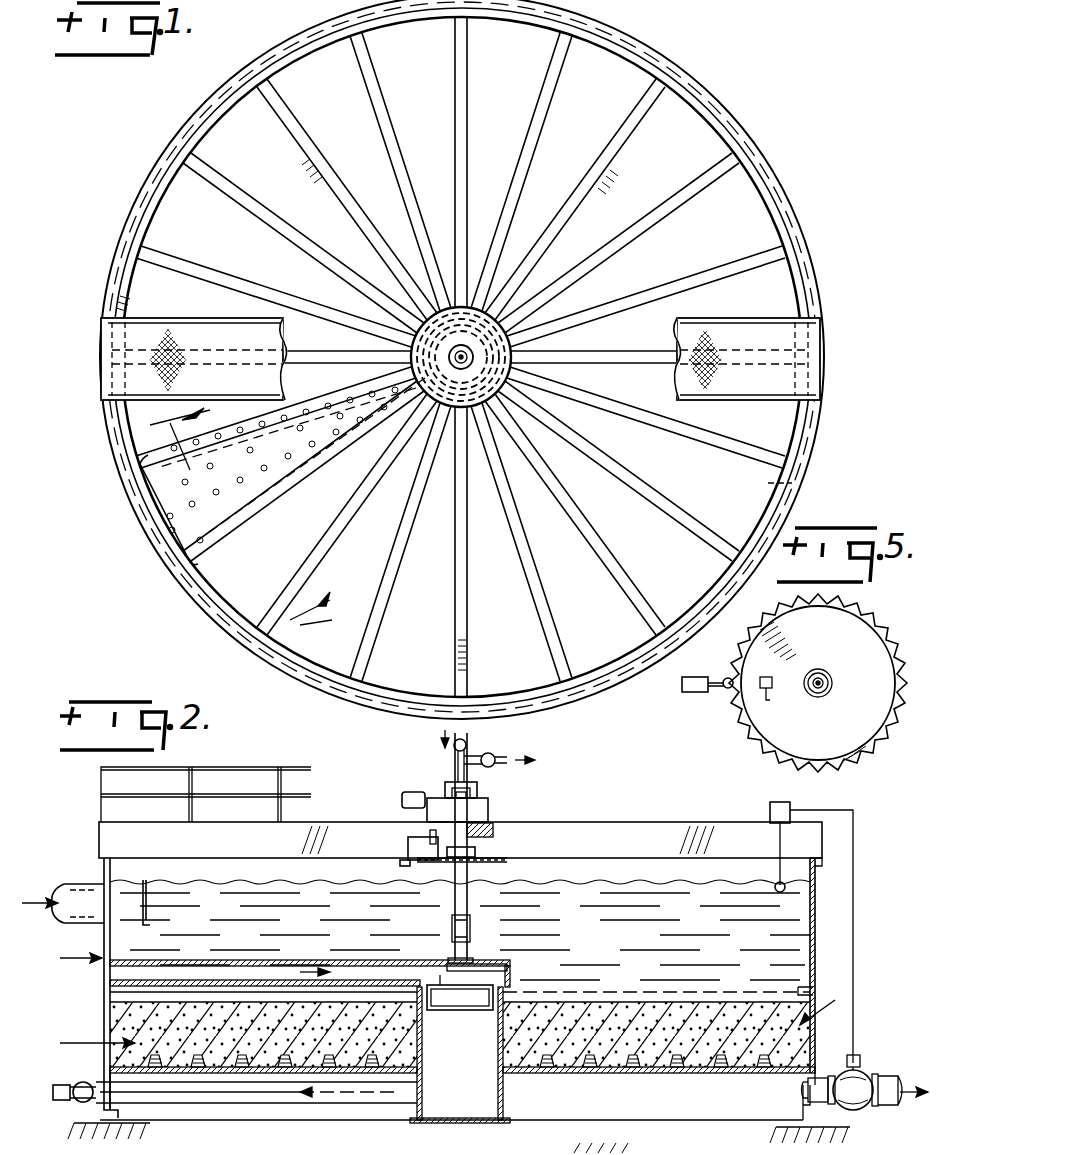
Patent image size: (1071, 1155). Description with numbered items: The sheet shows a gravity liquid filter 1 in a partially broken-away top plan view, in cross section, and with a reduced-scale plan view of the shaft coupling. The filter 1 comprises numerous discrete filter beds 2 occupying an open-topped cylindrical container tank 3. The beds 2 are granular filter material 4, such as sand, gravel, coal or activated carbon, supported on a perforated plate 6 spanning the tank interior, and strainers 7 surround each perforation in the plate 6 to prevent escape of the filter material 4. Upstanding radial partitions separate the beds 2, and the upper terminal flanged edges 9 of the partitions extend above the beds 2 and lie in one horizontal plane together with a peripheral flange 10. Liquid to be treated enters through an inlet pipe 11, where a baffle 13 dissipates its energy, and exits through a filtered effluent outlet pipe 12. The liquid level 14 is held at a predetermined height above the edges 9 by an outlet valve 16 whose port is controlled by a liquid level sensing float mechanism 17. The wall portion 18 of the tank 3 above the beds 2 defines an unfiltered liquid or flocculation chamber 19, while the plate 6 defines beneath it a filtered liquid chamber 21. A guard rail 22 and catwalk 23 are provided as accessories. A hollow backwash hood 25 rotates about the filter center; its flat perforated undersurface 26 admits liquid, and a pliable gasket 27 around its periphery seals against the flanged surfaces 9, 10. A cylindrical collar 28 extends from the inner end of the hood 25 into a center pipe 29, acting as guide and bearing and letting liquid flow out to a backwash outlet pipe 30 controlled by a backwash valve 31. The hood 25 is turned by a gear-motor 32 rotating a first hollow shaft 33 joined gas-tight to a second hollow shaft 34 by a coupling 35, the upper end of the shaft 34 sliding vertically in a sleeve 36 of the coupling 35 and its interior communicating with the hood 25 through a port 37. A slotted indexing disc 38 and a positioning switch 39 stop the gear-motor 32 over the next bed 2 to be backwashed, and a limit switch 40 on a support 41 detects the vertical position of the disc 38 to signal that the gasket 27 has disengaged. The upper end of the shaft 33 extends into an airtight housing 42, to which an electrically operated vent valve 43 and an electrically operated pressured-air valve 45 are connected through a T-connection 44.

In FIG. 1, the gravity liquid filter 1 is at (446, 359).
In FIG. 1, the filter bed 2 is at (192, 207).
In FIG. 2, the filter bed 2 is at (442, 1025).
In FIG. 1, the container tank 3 is at (826, 483).
In FIG. 2, the container tank 3 is at (71, 958).
In FIG. 2, the granular filter material 4 is at (615, 1073).
In FIG. 2, the perforated plate 6 is at (756, 1076).
In FIG. 2, the strainer 7 is at (712, 1074).
In FIG. 1, the flanged edge 9 is at (460, 618).
In FIG. 2, the flanged edge 9 is at (118, 1008).
In FIG. 1, the peripheral flange 10 is at (705, 115).
In FIG. 2, the peripheral flange 10 is at (800, 992).
In FIG. 2, the inlet pipe 11 is at (84, 884).
In FIG. 2, the filtered effluent outlet pipe 12 is at (880, 1110).
In FIG. 2, the baffle 13 is at (150, 925).
In FIG. 2, the liquid level 14 is at (700, 882).
In FIG. 2, the outlet valve 16 is at (856, 1075).
In FIG. 2, the liquid level sensing float mechanism 17 is at (770, 806).
In FIG. 2, the wall portion 18 is at (810, 938).
In FIG. 2, the flocculation chamber 19 is at (460, 930).
In FIG. 2, the filtered liquid chamber 21 is at (556, 1120).
In FIG. 1, the guard rail 22 is at (192, 318).
In FIG. 2, the guard rail 22 is at (250, 766).
In FIG. 1, the catwalk 23 is at (433, 342).
In FIG. 2, the catwalk 23 is at (125, 822).
In FIG. 1, the backwash hood 25 is at (185, 512).
In FIG. 2, the backwash hood 25 is at (300, 980).
In FIG. 2, the undersurface 26 is at (380, 986).
In FIG. 1, the gasket 27 is at (132, 470).
In FIG. 2, the gasket 27 is at (115, 983).
In FIG. 2, the collar 28 is at (494, 1008).
In FIG. 2, the center pipe 29 is at (492, 1124).
In FIG. 2, the backwash outlet pipe 30 is at (378, 1106).
In FIG. 2, the backwash valve 31 is at (80, 1102).
In FIG. 2, the gear-motor 32 is at (432, 800).
In FIG. 2, the first hollow shaft 33 is at (480, 830).
In FIG. 5, the second hollow shaft 34 is at (824, 690).
In FIG. 2, the second hollow shaft 34 is at (470, 930).
In FIG. 2, the coupling 35 is at (478, 852).
In FIG. 1, the sleeve 36 is at (461, 357).
In FIG. 5, the sleeve 36 is at (818, 670).
In FIG. 2, the port 37 is at (508, 966).
In FIG. 5, the slotted indexing disc 38 is at (852, 612).
In FIG. 2, the slotted indexing disc 38 is at (510, 860).
In FIG. 5, the positioning switch 39 is at (695, 692).
In FIG. 2, the positioning switch 39 is at (400, 864).
In FIG. 5, the limit switch 40 is at (779, 700).
In FIG. 2, the limit switch 40 is at (408, 845).
In FIG. 2, the support 41 is at (410, 835).
In FIG. 2, the airtight housing 42 is at (445, 790).
In FIG. 2, the vent valve 43 is at (508, 764).
In FIG. 2, the T-connection 44 is at (494, 752).
In FIG. 2, the electrically operated valve 45 is at (466, 745).